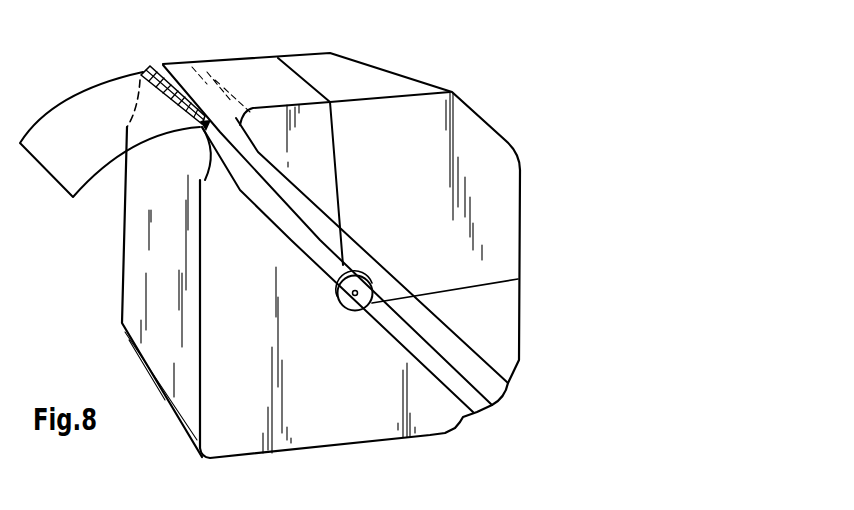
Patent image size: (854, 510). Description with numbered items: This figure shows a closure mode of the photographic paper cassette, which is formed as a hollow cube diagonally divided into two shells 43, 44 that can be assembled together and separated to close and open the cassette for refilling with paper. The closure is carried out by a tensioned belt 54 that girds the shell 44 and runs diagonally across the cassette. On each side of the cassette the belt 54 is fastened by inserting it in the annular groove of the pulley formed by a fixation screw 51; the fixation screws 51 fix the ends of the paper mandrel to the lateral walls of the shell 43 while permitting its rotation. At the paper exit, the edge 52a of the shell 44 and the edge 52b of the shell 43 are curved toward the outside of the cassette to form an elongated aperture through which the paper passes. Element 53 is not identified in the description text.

The shell 43 is at (148, 265).
The shell 44 is at (495, 338).
The fixation screws 51 is at (357, 283).
The edge of the shell 44 52a is at (161, 72).
The edge of the shell 43 52b is at (200, 128).
The flap 53 is at (143, 72).
The tensioned belt 54 is at (337, 137).